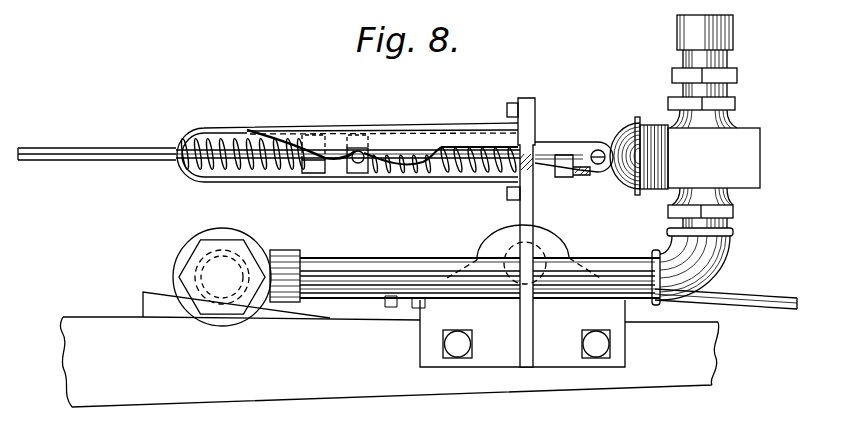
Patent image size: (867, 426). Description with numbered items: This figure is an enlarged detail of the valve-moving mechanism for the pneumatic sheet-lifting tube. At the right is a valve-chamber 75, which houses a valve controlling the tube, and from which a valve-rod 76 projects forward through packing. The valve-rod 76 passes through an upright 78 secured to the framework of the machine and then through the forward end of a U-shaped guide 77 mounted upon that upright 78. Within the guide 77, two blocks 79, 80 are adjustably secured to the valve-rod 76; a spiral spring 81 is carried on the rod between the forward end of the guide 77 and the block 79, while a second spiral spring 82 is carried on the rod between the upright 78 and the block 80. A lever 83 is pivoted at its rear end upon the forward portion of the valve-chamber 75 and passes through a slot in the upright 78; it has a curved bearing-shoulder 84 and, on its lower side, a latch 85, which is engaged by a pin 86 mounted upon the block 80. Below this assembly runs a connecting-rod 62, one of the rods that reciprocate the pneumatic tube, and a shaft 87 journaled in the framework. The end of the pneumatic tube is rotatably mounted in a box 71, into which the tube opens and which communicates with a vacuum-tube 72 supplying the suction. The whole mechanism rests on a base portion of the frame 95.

The connecting-rod 62 is at (746, 297).
The box 71 is at (228, 229).
The vacuum-tube 72 is at (735, 25).
The valve-chamber 75 is at (702, 176).
The valve-rod 76 is at (130, 150).
The U-shaped guide 77 is at (218, 127).
The upright 78 is at (528, 112).
The block 79 is at (313, 174).
The block 80 is at (362, 174).
The spiral spring 81 is at (212, 166).
The spiral spring 82 is at (472, 173).
The lever 83 is at (408, 142).
The curved bearing-shoulder 84 is at (428, 153).
The latch 85 is at (350, 152).
The pin 86 is at (361, 150).
The shaft 87 is at (541, 248).
The base frame 95 is at (389, 359).